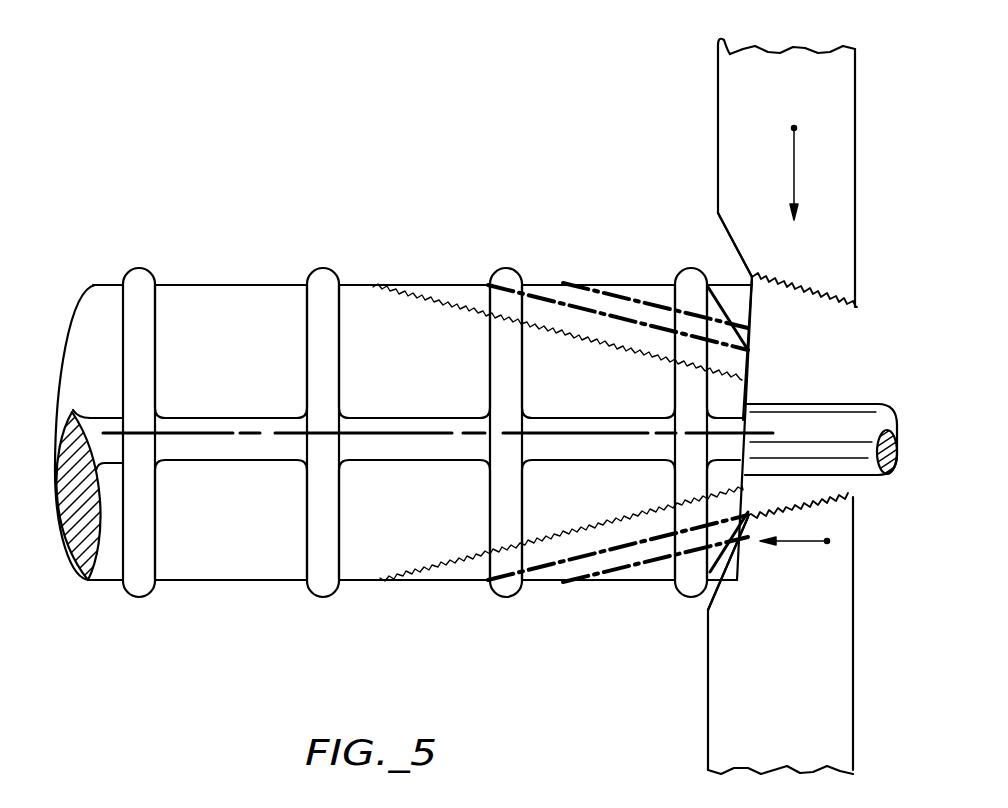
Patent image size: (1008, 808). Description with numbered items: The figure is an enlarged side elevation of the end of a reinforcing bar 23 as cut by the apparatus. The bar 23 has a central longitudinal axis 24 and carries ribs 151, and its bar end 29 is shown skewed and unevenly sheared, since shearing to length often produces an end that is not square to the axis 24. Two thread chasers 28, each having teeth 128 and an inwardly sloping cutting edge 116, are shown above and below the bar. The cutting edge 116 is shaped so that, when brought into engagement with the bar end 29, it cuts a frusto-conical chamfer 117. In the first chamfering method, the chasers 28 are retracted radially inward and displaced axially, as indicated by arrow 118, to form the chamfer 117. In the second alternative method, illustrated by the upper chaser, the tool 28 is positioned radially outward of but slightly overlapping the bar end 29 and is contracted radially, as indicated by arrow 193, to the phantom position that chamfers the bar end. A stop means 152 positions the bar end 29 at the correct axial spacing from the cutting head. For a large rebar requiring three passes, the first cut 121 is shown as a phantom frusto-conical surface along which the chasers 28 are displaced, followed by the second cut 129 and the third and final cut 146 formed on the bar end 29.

The bar 23 is at (184, 287).
The central longitudinal axis 24 is at (187, 437).
The rib 151 is at (440, 418).
The third cut 146 is at (407, 290).
The second cut 129 is at (535, 295).
The first cut 121 is at (612, 295).
The chamfer 117 is at (710, 293).
The bar end 29 is at (747, 380).
The stop means 152 is at (853, 404).
The thread chaser 28 is at (718, 53).
The teeth 128 is at (833, 312).
The cutting edge 116 is at (722, 226).
The arrow 193 is at (795, 162).
The arrow 118 is at (787, 543).